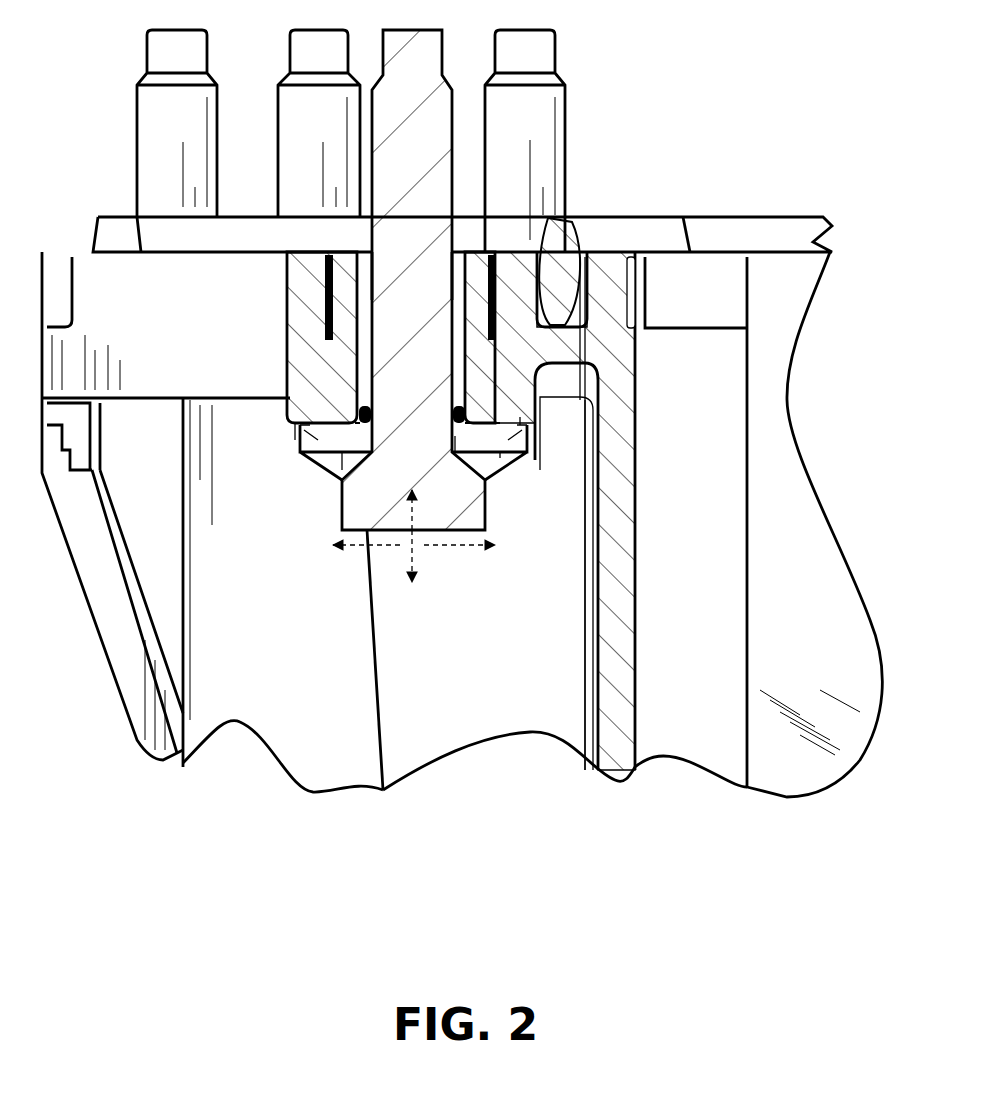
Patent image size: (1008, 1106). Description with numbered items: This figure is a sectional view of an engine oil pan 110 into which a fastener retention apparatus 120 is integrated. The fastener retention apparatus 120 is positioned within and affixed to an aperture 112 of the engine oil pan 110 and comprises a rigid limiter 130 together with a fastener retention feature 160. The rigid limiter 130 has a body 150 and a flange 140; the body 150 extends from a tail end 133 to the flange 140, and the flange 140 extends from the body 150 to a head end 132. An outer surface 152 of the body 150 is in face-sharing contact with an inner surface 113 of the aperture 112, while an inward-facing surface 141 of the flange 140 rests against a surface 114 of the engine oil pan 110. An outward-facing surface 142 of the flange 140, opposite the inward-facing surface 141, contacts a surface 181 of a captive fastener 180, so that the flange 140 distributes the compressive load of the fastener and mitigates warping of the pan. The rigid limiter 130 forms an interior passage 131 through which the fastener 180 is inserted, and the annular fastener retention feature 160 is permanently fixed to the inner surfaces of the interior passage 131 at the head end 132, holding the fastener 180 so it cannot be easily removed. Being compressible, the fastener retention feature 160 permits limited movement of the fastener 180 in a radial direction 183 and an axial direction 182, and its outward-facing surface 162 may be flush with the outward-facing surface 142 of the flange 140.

The engine oil pan 110 is at (738, 193).
The aperture 112 is at (413, 225).
The inner surface of the aperture 113 is at (332, 292).
The surface of the engine oil pan 114 is at (300, 425).
The fastener retention apparatus 120 is at (480, 232).
The rigid limiter 130 is at (496, 462).
The interior passage 131 is at (457, 250).
The head end 132 is at (340, 458).
The tail end 133 is at (346, 238).
The flange 140 is at (325, 417).
The inward-facing surface of the flange 141 is at (521, 419).
The outward-facing surface of the flange 142 is at (503, 455).
The body 150 is at (330, 352).
The outer surface of the body 152 is at (337, 272).
The fastener retention feature 160 is at (457, 406).
The outward-facing surface of the fastener retention feature 162 is at (376, 446).
The captive fastener 180 is at (427, 30).
The surface of the captive fastener 181 is at (456, 440).
The axial direction 182 is at (418, 515).
The radial direction 183 is at (455, 545).